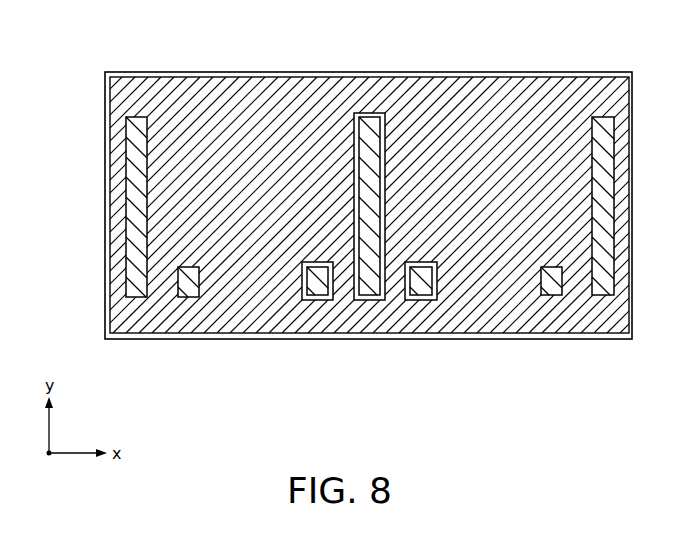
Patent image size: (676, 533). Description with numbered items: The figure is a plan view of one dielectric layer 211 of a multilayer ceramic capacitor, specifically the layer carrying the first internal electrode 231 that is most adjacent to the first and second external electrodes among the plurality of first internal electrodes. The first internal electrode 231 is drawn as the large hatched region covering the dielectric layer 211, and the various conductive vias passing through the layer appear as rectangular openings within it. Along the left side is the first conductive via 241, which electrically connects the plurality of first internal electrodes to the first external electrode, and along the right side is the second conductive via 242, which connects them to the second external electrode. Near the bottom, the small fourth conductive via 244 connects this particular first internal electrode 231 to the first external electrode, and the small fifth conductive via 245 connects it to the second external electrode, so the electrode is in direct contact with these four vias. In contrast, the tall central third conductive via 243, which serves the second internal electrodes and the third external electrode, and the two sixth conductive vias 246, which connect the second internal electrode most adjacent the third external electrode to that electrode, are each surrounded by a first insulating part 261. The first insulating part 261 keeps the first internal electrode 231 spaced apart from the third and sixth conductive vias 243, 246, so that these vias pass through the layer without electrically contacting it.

The dielectric layer 211 is at (590, 72).
The first internal electrode 231 is at (500, 88).
The first conductive via 241 is at (137, 285).
The second conductive via 242 is at (603, 293).
The third conductive via 243 is at (370, 123).
The fourth conductive via 244 is at (190, 289).
The fifth conductive via 245 is at (553, 293).
The sixth conductive via 246 is at (323, 288).
The first insulating part 261 is at (358, 128).